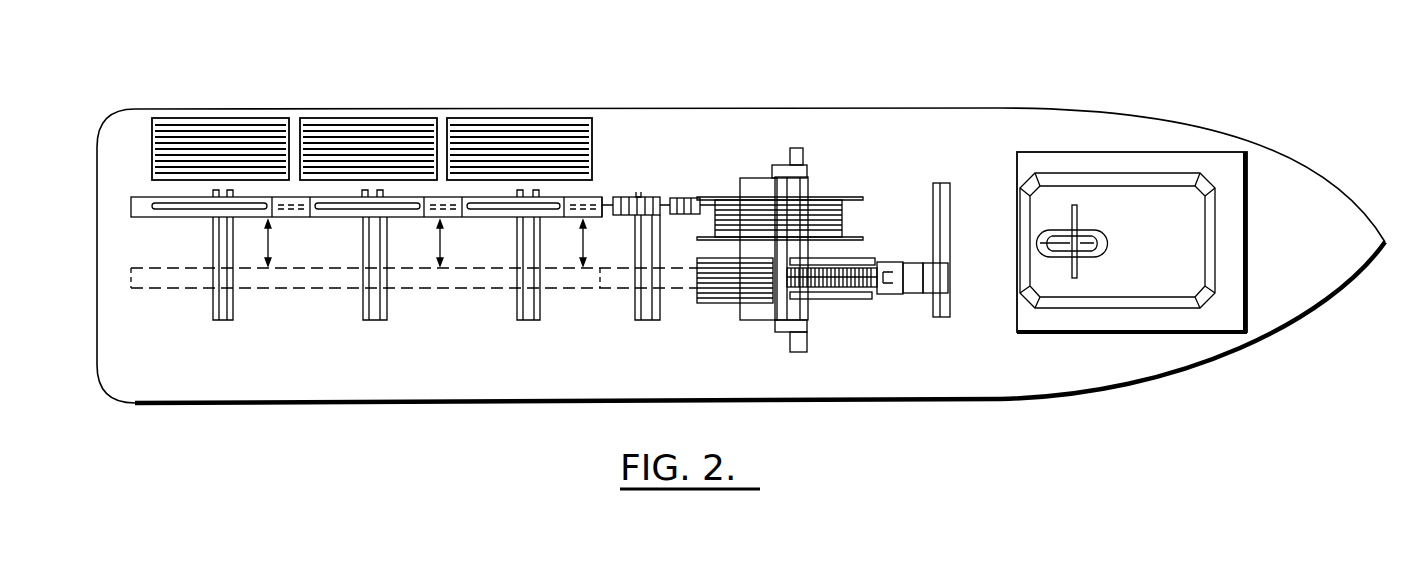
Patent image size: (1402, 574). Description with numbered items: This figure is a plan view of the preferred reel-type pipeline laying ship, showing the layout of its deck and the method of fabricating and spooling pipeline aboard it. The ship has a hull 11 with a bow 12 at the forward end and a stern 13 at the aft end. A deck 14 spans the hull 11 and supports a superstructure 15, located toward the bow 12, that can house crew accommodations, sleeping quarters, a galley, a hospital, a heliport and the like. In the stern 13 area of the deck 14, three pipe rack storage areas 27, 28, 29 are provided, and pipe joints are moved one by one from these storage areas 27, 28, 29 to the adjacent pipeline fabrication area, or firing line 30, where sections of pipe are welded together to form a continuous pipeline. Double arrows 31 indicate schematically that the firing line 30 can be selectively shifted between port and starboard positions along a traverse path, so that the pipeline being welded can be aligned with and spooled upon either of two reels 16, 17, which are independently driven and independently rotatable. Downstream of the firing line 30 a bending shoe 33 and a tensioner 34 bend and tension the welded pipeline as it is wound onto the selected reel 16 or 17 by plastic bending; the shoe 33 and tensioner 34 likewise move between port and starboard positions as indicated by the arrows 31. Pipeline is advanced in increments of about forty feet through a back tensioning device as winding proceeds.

The hull 11 is at (1008, 395).
The bow 12 is at (1300, 185).
The stern 13 is at (140, 405).
The deck 14 is at (937, 125).
The superstructure 15 is at (1140, 182).
The reel 16 is at (845, 198).
The reel 17 is at (720, 305).
The pipe rack storage area 27 is at (205, 130).
The pipe rack storage area 28 is at (400, 130).
The pipe rack storage area 29 is at (545, 130).
The firing line 30 is at (165, 215).
The double arrows 31 is at (272, 243).
The bending shoe 33 is at (685, 195).
The tensioner 34 is at (621, 195).